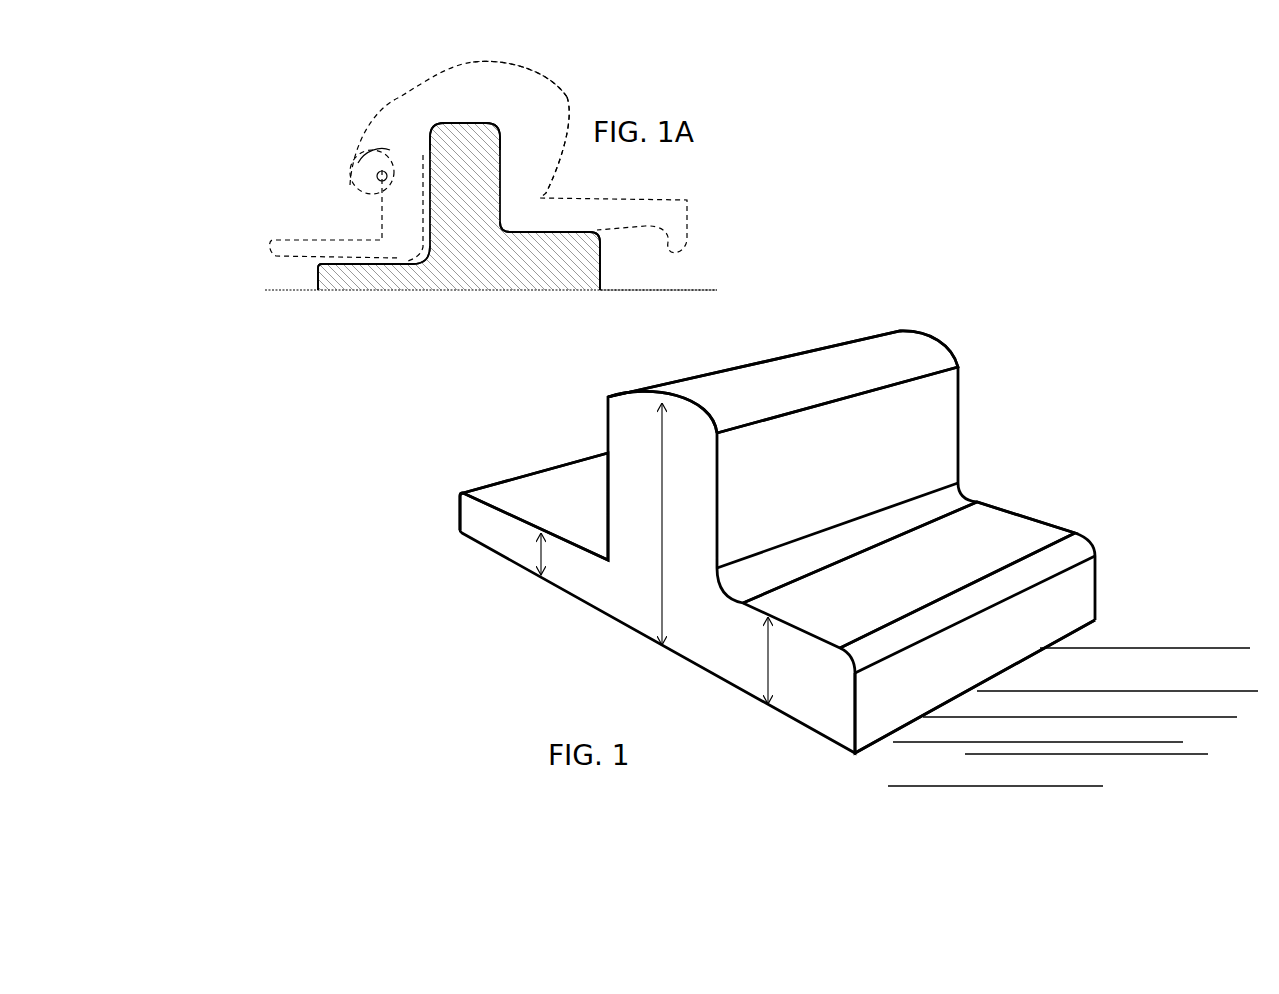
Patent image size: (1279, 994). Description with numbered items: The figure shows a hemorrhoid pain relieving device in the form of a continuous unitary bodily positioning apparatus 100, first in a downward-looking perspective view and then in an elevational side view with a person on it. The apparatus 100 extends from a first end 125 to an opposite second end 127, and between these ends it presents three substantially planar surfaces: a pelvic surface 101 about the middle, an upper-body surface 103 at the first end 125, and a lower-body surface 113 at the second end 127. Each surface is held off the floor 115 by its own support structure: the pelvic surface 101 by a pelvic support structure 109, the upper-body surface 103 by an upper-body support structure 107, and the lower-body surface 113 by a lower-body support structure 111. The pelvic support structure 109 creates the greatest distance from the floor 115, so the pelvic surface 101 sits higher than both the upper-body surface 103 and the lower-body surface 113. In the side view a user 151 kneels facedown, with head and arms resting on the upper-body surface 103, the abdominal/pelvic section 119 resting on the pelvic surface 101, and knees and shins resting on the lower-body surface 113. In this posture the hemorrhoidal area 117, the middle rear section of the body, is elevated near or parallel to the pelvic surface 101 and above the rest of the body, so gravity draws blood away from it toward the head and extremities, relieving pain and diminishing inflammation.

In FIG. 1A, the bodily positioning apparatus 100 is at (458, 242).
In FIG. 1, the bodily positioning apparatus 100 is at (1108, 303).
In FIG. 1A, the pelvic surface 101 is at (464, 124).
In FIG. 1, the pelvic surface 101 is at (863, 364).
In FIG. 1A, the upper-body surface 103 is at (392, 264).
In FIG. 1, the upper-body surface 103 is at (551, 493).
In FIG. 1, the upper-body support structure 107 is at (538, 575).
In FIG. 1, the pelvic support structure 109 is at (661, 572).
In FIG. 1, the lower-body support structure 111 is at (767, 655).
In FIG. 1A, the lower-body surface 113 is at (547, 233).
In FIG. 1, the lower-body surface 113 is at (977, 529).
In FIG. 1A, the floor 115 is at (688, 288).
In FIG. 1, the floor 115 is at (1148, 690).
In FIG. 1A, the hemorrhoidal area 117 is at (567, 107).
In FIG. 1A, the abdominal/pelvic section 119 is at (512, 126).
In FIG. 1A, the first end 125 is at (306, 308).
In FIG. 1, the first end 125 is at (442, 532).
In FIG. 1A, the second end 127 is at (637, 308).
In FIG. 1, the second end 127 is at (849, 788).
In FIG. 1A, the user 151 is at (398, 100).